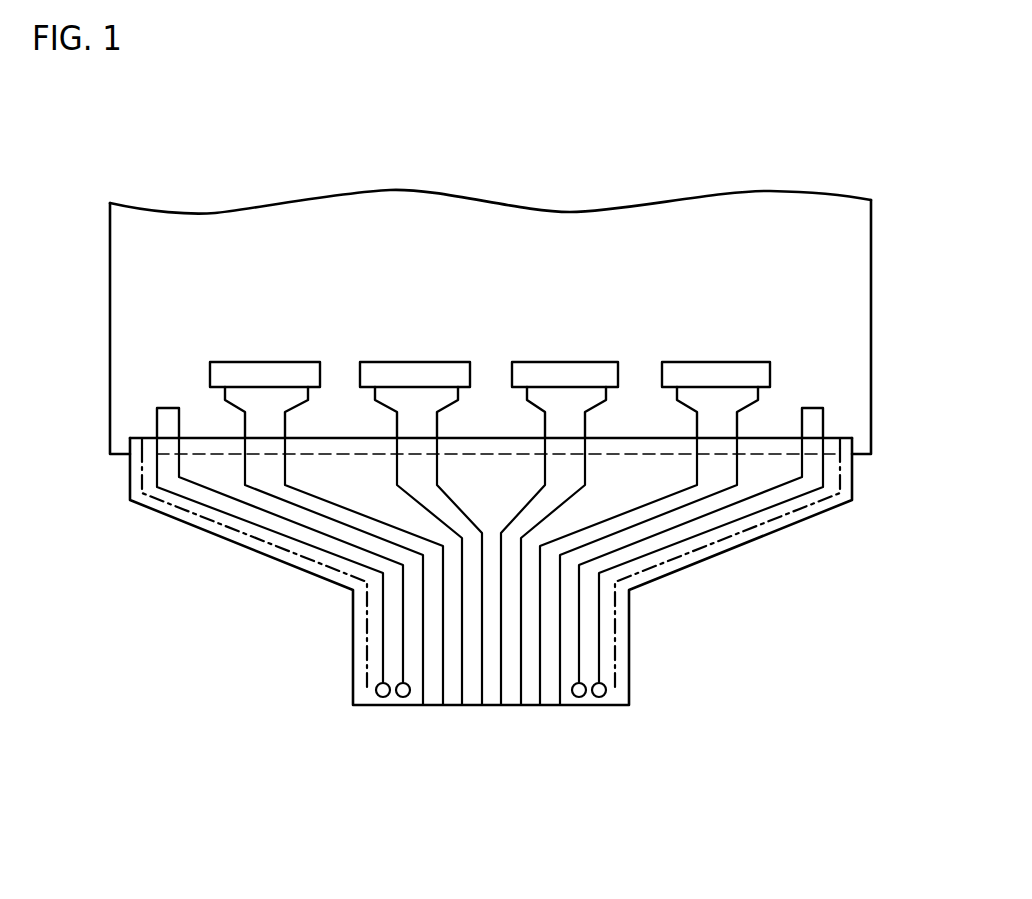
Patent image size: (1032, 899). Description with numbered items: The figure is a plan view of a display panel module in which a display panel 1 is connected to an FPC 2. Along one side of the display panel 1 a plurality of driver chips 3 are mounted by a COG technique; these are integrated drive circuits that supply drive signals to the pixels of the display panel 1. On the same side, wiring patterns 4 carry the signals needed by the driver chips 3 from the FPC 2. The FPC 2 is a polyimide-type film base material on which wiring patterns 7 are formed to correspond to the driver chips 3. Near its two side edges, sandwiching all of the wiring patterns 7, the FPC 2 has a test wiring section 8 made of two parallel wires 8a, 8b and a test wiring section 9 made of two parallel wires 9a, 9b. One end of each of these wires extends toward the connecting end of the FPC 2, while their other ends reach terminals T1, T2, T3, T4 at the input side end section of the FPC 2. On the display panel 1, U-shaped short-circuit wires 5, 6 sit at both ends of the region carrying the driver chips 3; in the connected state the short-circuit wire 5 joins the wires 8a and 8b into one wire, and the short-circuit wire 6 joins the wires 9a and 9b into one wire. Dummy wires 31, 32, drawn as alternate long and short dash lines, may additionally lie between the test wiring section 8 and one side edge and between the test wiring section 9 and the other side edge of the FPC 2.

The display panel 1 is at (843, 196).
The FPC 2 is at (812, 517).
The driver chips 3 is at (210, 373).
The wiring patterns 4 is at (225, 395).
The short-circuit wire 5 is at (823, 421).
The short-circuit wire 6 is at (157, 418).
The wiring patterns 7 is at (443, 687).
The test wiring section 8 is at (701, 560).
The wire 8a is at (673, 530).
The wire 8b is at (728, 527).
The test wiring section 9 is at (280, 560).
The wire 9a is at (305, 532).
The wire 9b is at (251, 530).
The dummy wire 31 is at (619, 683).
The dummy wire 32 is at (363, 674).
The terminal T1 is at (579, 698).
The terminal T2 is at (600, 698).
The terminal T3 is at (403, 698).
The terminal T4 is at (383, 698).